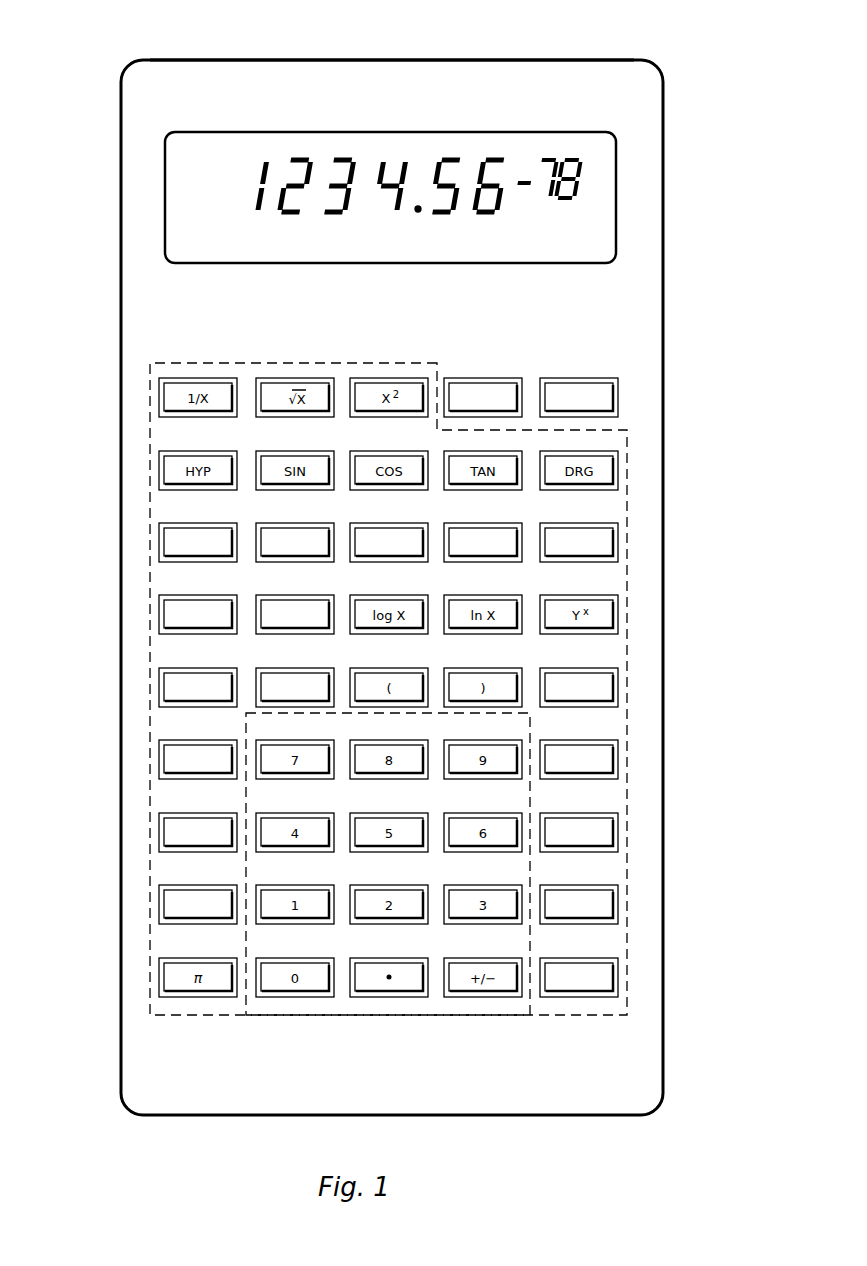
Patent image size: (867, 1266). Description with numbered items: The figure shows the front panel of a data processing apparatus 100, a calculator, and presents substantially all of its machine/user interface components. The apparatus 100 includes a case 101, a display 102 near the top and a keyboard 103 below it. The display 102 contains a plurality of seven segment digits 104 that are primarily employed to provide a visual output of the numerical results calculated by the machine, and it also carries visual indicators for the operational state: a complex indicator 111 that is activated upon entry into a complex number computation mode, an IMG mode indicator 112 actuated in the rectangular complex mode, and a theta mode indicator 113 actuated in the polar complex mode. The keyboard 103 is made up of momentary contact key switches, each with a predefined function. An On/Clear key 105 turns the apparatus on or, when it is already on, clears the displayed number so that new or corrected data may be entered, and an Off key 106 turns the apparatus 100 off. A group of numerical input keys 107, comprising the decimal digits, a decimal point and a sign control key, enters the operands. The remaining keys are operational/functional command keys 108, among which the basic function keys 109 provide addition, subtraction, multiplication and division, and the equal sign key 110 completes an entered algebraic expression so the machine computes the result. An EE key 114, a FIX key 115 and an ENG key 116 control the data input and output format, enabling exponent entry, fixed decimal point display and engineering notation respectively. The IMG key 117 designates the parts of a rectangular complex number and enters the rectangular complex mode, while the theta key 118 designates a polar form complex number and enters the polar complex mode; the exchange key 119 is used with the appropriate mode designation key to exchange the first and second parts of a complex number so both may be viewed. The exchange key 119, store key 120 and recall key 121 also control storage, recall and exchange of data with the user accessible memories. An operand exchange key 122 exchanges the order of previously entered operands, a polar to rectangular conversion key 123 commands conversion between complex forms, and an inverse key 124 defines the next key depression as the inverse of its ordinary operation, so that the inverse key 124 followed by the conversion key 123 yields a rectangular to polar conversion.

The data processing apparatus 100 is at (686, 168).
The case 101 is at (212, 60).
The display 102 is at (517, 132).
The keyboard 103 is at (648, 583).
The seven segment digits 104 is at (445, 152).
The On/Clear key 105 is at (560, 378).
The Off key 106 is at (468, 378).
The numerical input keys 107 is at (405, 1015).
The operational/functional command keys 108 is at (628, 538).
The basic function keys 109 is at (662, 805).
The equal sign key 110 is at (598, 998).
The complex indicator 111 is at (240, 261).
The IMG mode indicator 112 is at (297, 257).
The theta mode indicator 113 is at (338, 252).
The EE key 114 is at (300, 523).
The FIX key 115 is at (400, 523).
The ENG key 116 is at (490, 523).
The IMG key 117 is at (159, 612).
The theta key 118 is at (159, 688).
The exchange key 119 is at (159, 903).
The store key 120 is at (159, 757).
The recall key 121 is at (159, 828).
The operand exchange key 122 is at (306, 668).
The polar to rectangular conversion key 123 is at (305, 595).
The inverse key 124 is at (159, 540).